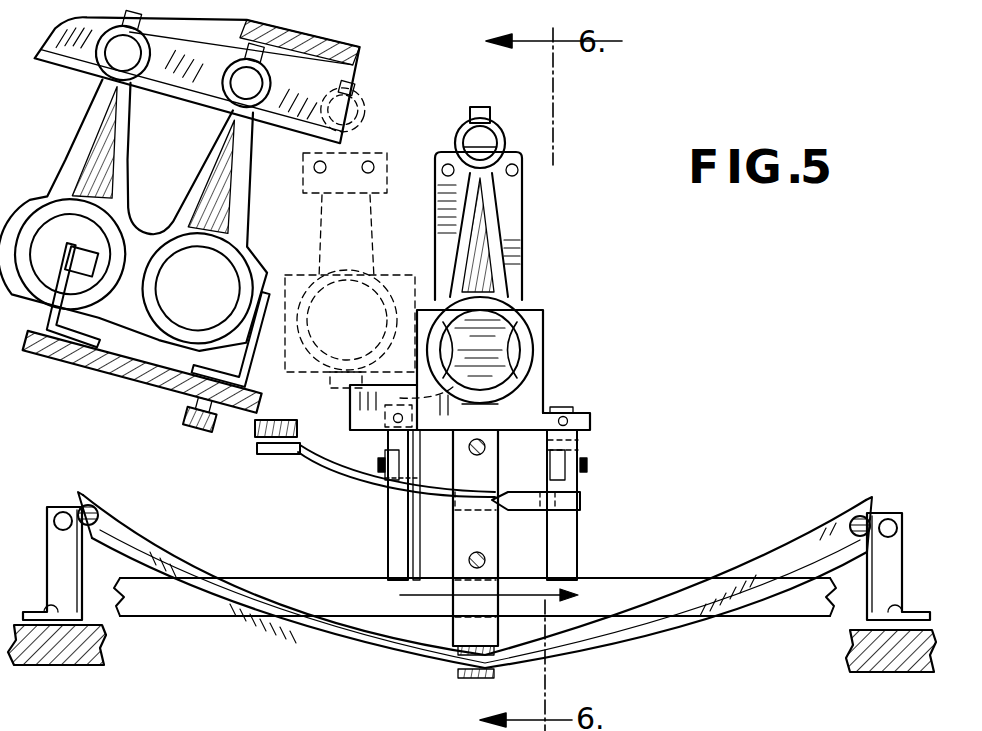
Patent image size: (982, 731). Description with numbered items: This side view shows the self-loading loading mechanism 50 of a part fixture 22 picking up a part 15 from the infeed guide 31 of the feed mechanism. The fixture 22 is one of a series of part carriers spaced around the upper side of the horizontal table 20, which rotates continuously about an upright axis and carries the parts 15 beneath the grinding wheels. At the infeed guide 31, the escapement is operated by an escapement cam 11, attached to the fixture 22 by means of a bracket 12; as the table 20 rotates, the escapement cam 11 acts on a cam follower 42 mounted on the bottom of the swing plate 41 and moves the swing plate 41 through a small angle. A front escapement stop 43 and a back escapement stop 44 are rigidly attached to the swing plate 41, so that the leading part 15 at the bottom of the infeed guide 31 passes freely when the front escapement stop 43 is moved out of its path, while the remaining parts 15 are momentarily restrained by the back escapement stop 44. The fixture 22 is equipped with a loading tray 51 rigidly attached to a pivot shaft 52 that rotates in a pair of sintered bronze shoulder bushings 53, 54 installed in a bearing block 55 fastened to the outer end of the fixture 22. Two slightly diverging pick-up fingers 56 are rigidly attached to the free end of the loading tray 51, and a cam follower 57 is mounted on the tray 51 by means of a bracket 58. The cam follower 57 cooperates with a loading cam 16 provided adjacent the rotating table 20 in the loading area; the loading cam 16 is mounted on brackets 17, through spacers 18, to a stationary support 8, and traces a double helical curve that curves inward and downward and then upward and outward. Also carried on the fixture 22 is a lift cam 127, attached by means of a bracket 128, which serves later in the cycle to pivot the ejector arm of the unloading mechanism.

The stationary support 8 is at (97, 648).
The escapement cam 11 is at (295, 458).
The bracket 12 is at (362, 488).
The parts 15 is at (127, 143).
The loading cam 16 is at (342, 655).
The brackets 17 is at (62, 564).
The spacers 18 is at (94, 507).
The horizontal table 20 is at (287, 592).
The fixture 22 is at (478, 498).
The infeed guide 31 is at (352, 88).
The swing plate 41 is at (68, 372).
The cam follower 42 is at (199, 424).
The front escapement stop 43 is at (257, 363).
The back escapement stop 44 is at (82, 262).
The loading mechanism 50 is at (526, 268).
The loading tray 51 is at (515, 242).
The pivot shaft 52 is at (590, 463).
The shoulder bushing 53 is at (387, 442).
The shoulder bushing 54 is at (577, 445).
The bearing block 55 is at (397, 565).
The pick-up fingers 56 is at (321, 174).
The cam follower 57 is at (462, 676).
The bracket 58 is at (443, 620).
The lift cam 127 is at (590, 423).
The bracket 128 is at (352, 421).